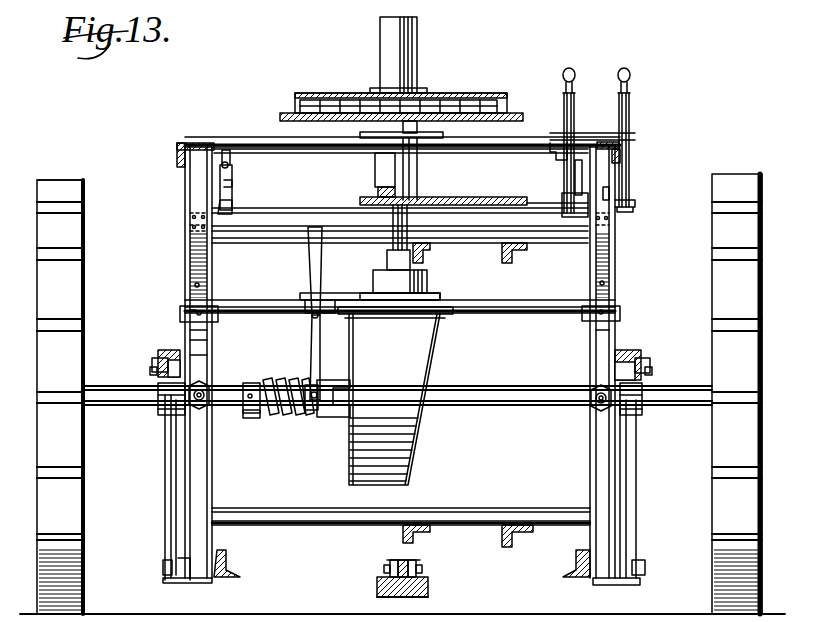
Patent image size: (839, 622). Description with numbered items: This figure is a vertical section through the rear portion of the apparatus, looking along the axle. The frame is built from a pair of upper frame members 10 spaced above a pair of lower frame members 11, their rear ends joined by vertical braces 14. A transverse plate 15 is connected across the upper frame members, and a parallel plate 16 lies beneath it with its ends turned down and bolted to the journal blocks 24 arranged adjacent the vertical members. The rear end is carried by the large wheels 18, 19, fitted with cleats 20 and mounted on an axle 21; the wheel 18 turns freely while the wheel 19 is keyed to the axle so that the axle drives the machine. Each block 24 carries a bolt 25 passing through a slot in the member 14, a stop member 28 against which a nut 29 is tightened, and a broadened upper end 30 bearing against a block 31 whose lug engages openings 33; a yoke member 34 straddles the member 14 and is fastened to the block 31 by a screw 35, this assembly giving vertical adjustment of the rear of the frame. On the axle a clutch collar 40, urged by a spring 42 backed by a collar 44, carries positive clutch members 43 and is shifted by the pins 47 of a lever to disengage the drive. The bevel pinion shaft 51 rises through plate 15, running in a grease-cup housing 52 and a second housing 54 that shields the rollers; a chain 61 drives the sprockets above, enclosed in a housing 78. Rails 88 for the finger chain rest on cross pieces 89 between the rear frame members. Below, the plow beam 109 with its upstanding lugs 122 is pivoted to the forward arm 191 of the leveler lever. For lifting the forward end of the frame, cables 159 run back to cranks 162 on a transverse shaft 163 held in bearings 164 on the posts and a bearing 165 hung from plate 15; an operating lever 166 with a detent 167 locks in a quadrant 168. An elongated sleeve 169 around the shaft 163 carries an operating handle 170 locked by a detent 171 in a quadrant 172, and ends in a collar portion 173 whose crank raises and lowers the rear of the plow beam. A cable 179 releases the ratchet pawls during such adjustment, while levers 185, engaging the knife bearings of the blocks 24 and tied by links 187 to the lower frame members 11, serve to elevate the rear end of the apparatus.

The upper frame members 10 is at (177, 147).
The lower frame members 11 is at (232, 577).
The vertical braces 14 is at (216, 496).
The transverse plate 15 is at (545, 150).
The plate 16 is at (530, 316).
The wheel 18 is at (73, 292).
The wheel 19 is at (720, 290).
The cleats 20 is at (68, 314).
The axle 21 is at (672, 392).
The journal blocks 24 is at (160, 410).
The bolt 25 is at (207, 390).
The stop member 28 is at (248, 413).
The nut 29 is at (185, 417).
The broadened upper end 30 is at (205, 360).
The block 31 is at (205, 352).
The openings 33 is at (195, 283).
The yoke member 34 is at (206, 314).
The screw 35 is at (185, 310).
The clutch collar 40 is at (323, 420).
The spring 42 is at (287, 380).
The positive clutch members 43 is at (335, 383).
The collar 44 is at (256, 418).
The pins 47 is at (308, 418).
The vertical shaft 51 is at (393, 238).
The housing 52 is at (428, 285).
The second housing 54 is at (412, 268).
The chain 61 is at (350, 95).
The housing 78 is at (488, 95).
The rails 88 is at (530, 255).
The cross pieces 89 is at (313, 508).
The plow beam 109 is at (430, 587).
The upstanding lugs 122 is at (405, 558).
The cable 159 is at (226, 162).
The crank 162 is at (232, 192).
The transverse shaft 163 is at (296, 200).
The bearings 164 is at (195, 228).
The bearing 165 is at (375, 178).
The operating lever 166 is at (630, 115).
The detent 167 is at (625, 145).
The quadrant 168 is at (631, 136).
The elongated sleeve 169 is at (460, 197).
The operating handle 170 is at (573, 122).
The detent 171 is at (556, 143).
The quadrant 172 is at (533, 173).
The collar portion 173 is at (400, 198).
The cable 179 is at (233, 181).
The lever 185 is at (168, 350).
The links 187 is at (165, 512).
The forward arm 191 is at (390, 560).